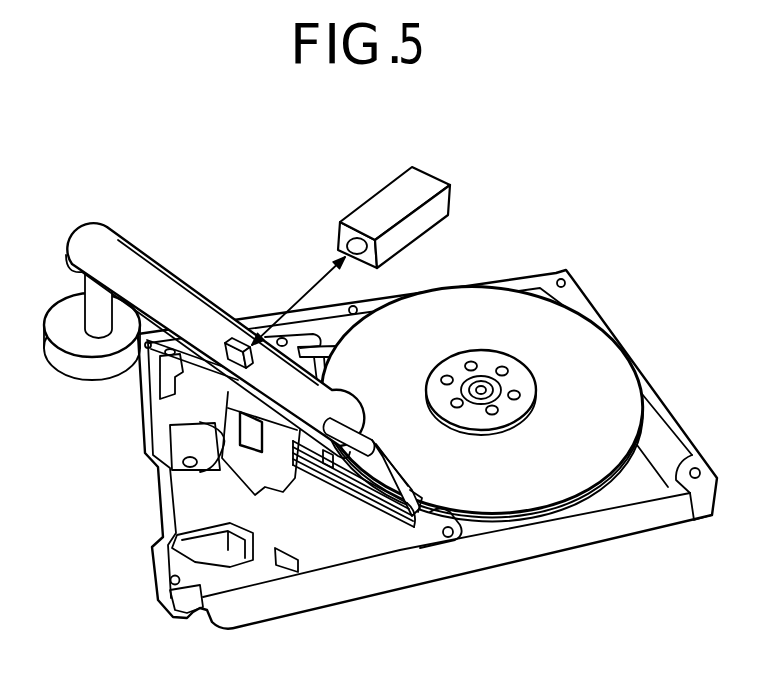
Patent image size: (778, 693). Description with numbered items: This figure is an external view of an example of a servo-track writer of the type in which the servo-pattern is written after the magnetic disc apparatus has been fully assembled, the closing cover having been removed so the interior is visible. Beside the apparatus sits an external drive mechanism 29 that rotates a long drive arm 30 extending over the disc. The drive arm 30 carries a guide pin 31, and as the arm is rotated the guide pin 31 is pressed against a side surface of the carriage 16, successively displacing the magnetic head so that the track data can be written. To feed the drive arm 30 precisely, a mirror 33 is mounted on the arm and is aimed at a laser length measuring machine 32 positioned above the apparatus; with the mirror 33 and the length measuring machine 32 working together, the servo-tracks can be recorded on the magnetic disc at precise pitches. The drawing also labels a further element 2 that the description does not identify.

The base (chassis) 2 is at (593, 302).
The carriage 16 is at (350, 493).
The external drive mechanism 29 is at (80, 368).
The drive arm 30 is at (177, 317).
The guide pin 31 is at (327, 463).
The laser length measuring machine 32 is at (430, 175).
The mirror 33 is at (243, 333).